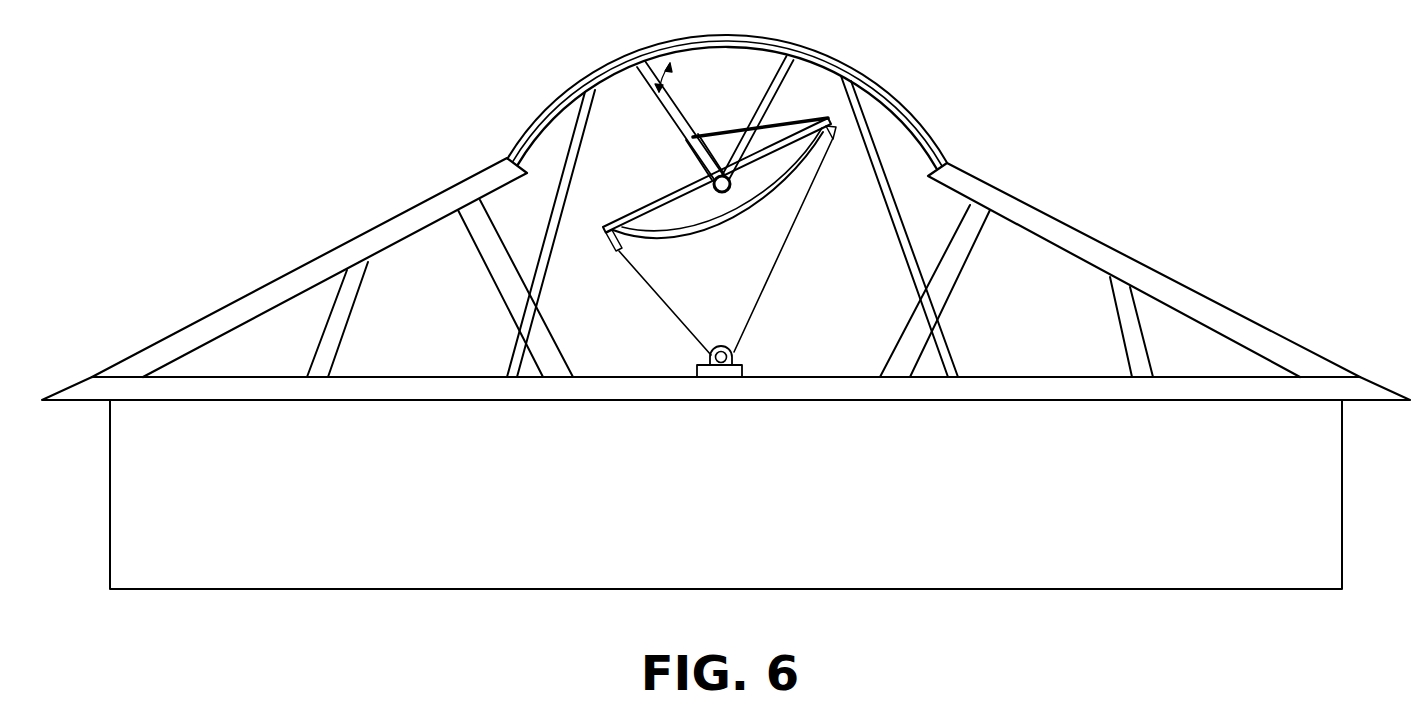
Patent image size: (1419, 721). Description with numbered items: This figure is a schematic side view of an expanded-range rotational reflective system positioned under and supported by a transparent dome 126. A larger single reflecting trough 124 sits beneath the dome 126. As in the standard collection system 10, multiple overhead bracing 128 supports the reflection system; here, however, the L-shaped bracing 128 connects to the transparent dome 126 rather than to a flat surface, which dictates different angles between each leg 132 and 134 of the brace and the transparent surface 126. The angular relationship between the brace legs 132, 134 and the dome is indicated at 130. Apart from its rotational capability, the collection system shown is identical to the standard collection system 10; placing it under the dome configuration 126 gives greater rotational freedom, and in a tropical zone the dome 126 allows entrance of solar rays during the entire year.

The standard collection system 10 is at (652, 167).
The single reflecting trough 124 is at (780, 180).
The transparent dome 126 is at (850, 68).
The overhead bracing 128 is at (781, 80).
The angular gap 130 is at (674, 79).
The leg 132 is at (664, 121).
The leg 134 is at (772, 98).